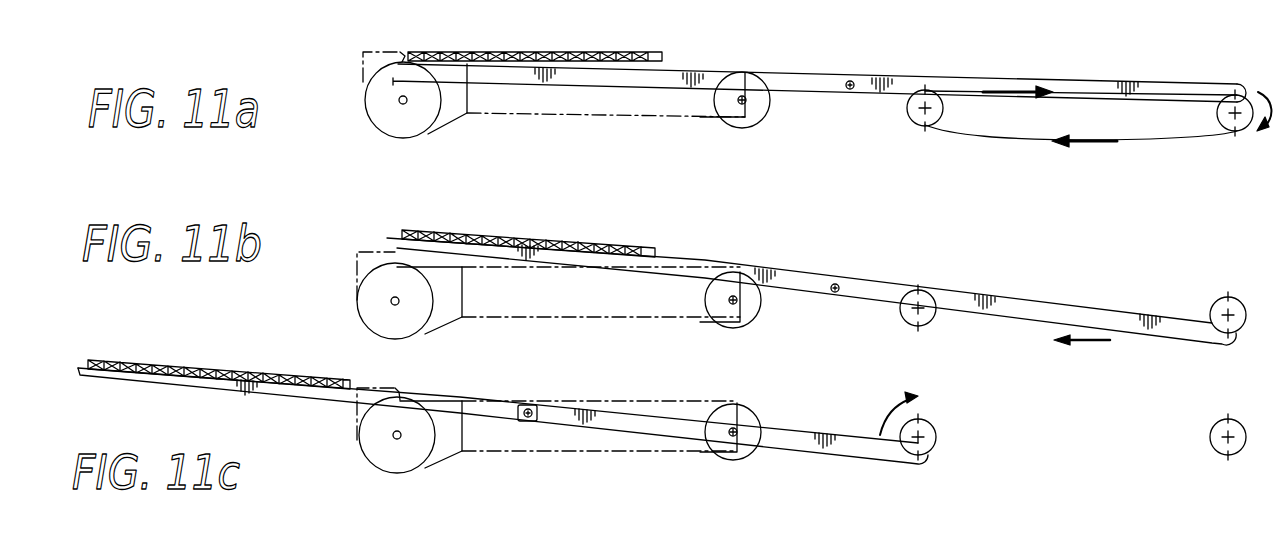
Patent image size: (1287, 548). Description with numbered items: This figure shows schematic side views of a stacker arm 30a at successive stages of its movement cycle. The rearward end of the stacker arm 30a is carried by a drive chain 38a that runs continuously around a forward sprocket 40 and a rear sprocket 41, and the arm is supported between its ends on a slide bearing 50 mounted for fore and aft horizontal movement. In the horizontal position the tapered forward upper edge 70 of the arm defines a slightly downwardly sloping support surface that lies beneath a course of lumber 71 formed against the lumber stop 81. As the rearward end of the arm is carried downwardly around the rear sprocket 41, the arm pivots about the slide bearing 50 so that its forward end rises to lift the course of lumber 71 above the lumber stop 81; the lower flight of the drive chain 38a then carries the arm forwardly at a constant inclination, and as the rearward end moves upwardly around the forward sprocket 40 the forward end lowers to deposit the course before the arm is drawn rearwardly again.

In FIG. 11a, the lumber stop 81 is at (408, 54).
In FIG. 11b, the lumber stop 81 is at (399, 249).
In FIG. 11a, the course of lumber 71 is at (500, 63).
In FIG. 11b, the course of lumber 71 is at (560, 240).
In FIG. 11c, the course of lumber 71 is at (257, 368).
In FIG. 11a, the tapered forward upper edge 70 is at (537, 84).
In FIG. 11a, the slide bearing 50 is at (852, 81).
In FIG. 11a, the stacker arm 30a is at (858, 100).
In FIG. 11a, the forward sprocket 40 is at (937, 120).
In FIG. 11a, the drive chain 38a is at (1133, 141).
In FIG. 11a, the rear sprocket 41 is at (1245, 130).